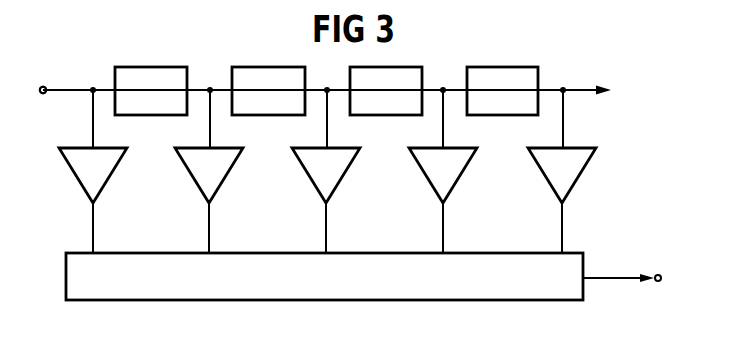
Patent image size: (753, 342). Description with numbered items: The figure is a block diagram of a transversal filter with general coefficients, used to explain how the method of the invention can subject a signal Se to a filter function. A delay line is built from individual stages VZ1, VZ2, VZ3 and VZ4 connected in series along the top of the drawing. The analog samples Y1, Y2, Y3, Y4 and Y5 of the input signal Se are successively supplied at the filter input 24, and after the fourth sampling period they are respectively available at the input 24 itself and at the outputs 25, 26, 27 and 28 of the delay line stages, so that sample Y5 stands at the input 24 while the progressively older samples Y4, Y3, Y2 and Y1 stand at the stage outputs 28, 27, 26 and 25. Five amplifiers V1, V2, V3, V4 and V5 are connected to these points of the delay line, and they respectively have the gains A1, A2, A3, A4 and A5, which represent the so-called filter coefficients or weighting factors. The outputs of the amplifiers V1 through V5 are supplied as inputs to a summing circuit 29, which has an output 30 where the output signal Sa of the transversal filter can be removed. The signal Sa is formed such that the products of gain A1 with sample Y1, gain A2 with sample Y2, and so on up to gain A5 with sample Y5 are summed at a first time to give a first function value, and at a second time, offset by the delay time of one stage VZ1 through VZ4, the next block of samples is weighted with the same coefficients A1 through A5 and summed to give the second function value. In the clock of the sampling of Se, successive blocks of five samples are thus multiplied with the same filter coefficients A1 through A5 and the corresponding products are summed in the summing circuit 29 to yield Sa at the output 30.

The filter input 24 is at (55, 106).
The output of delay line stage 25 is at (562, 91).
The output of delay line stage 26 is at (442, 91).
The output of delay line stage 27 is at (326, 91).
The output of delay line stage 28 is at (209, 91).
The summing circuit 29 is at (473, 290).
The output 30 is at (622, 266).
The gain of amplifier V1 A1 is at (563, 200).
The gain of amplifier V2 A2 is at (446, 200).
The gain of amplifier V3 A3 is at (329, 200).
The gain of amplifier V4 A4 is at (212, 200).
The gain of amplifier V5 A5 is at (95, 200).
The amplifier V1 is at (591, 187).
The amplifier V2 is at (472, 187).
The amplifier V3 is at (355, 187).
The amplifier V4 is at (238, 187).
The amplifier V5 is at (122, 187).
The delay line stage VZ1 is at (151, 91).
The delay line stage VZ2 is at (268, 91).
The delay line stage VZ3 is at (386, 91).
The delay line stage VZ4 is at (502, 91).
The analog sample Y1 is at (563, 78).
The analog sample Y2 is at (444, 78).
The analog sample Y3 is at (326, 78).
The analog sample Y4 is at (210, 78).
The analog sample Y5 is at (44, 78).